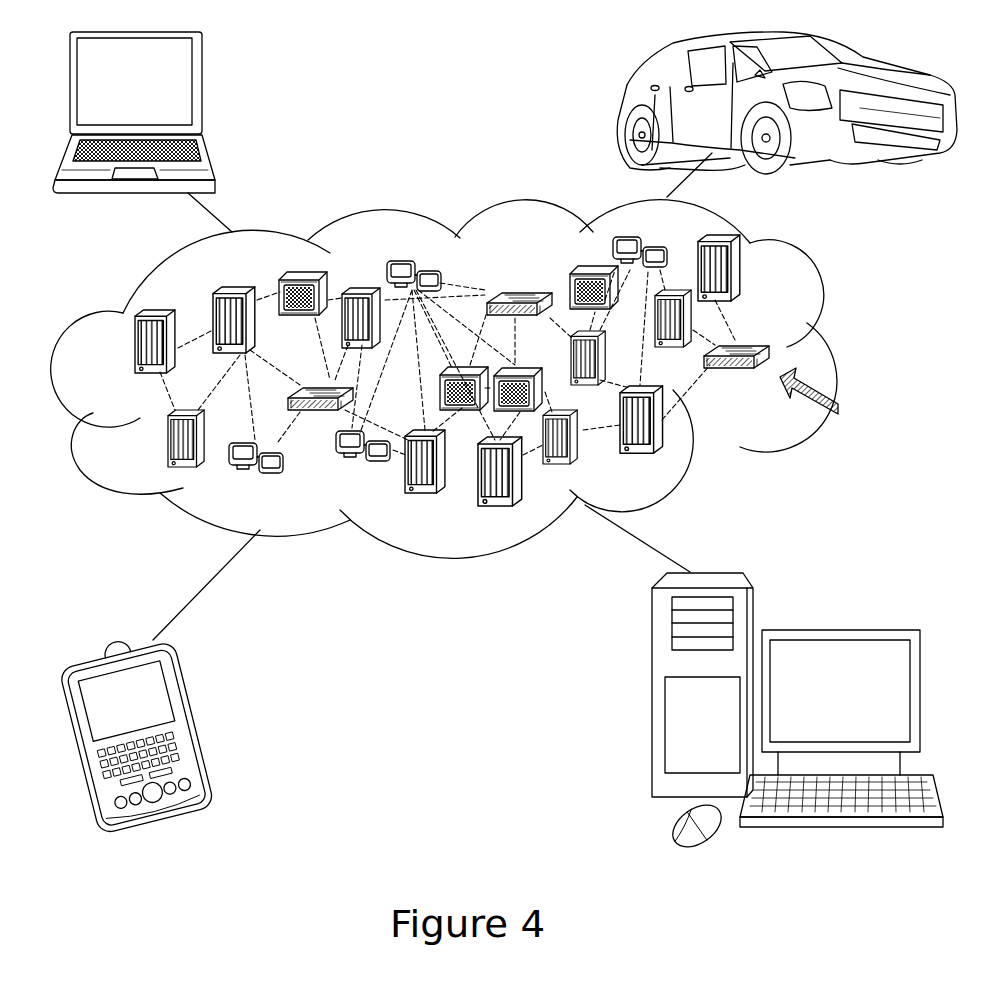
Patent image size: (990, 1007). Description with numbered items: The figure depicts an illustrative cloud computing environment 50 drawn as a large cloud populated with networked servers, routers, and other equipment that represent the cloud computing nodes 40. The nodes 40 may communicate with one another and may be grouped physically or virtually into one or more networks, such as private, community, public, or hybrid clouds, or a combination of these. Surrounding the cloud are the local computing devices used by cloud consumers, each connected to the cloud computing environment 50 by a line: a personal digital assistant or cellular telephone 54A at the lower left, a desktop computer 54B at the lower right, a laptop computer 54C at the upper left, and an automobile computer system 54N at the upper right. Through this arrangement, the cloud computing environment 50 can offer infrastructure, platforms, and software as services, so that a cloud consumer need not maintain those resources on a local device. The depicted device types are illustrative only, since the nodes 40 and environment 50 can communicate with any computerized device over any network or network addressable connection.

The laptop computer 54C is at (203, 90).
The automobile computer system 54N is at (622, 103).
The personal digital assistant or cellular telephone 54A is at (192, 723).
The desktop computer 54B is at (833, 630).
The cloud computing environment 50 is at (838, 352).
The cloud computing nodes 40 is at (829, 399).